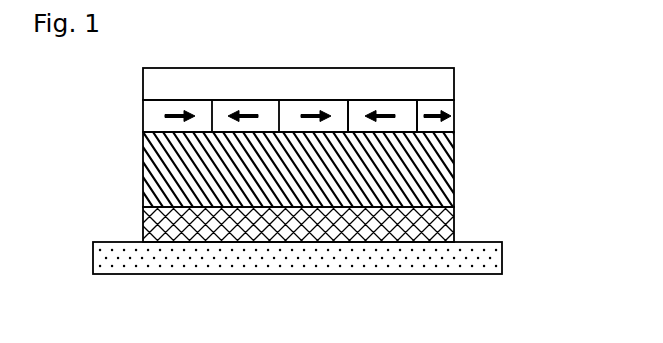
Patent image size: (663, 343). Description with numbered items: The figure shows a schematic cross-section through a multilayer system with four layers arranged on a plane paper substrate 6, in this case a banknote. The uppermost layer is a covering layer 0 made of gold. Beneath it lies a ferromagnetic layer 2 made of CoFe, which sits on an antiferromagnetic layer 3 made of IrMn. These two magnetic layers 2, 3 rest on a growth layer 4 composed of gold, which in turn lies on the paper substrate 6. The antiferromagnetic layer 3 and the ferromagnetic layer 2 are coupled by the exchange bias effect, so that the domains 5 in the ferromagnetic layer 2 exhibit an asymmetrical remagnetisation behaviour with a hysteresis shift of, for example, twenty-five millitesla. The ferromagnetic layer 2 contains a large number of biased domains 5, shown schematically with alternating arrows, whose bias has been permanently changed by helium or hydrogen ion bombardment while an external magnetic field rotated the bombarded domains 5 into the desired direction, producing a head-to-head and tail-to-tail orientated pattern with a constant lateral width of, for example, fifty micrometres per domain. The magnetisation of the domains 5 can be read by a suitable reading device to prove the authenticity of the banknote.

The covering layer 0 is at (454, 80).
The ferromagnetic layer 2 is at (454, 117).
The antiferromagnetic layer 3 is at (454, 165).
The growth layer 4 is at (454, 220).
The domains 5 is at (402, 108).
The paper substrate 6 is at (502, 260).